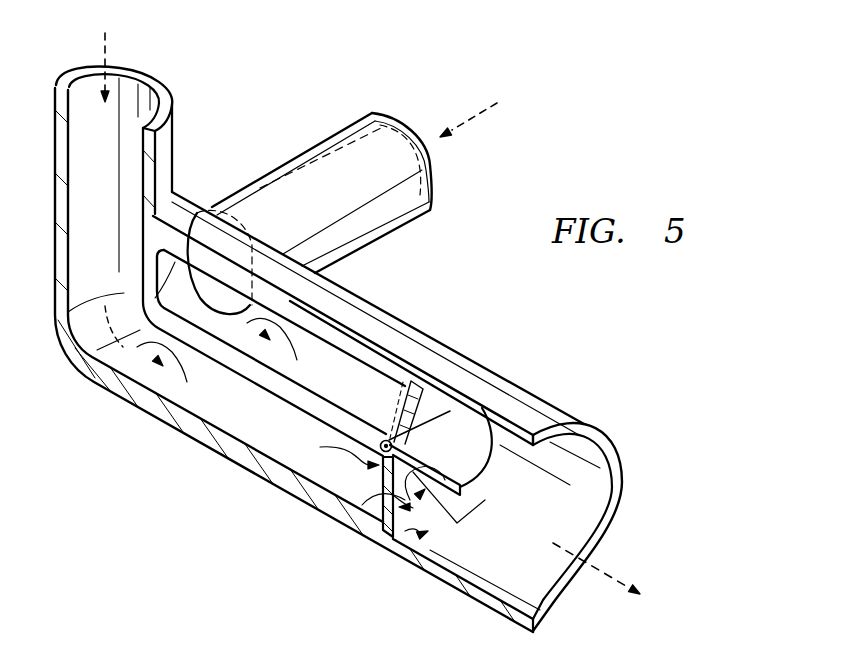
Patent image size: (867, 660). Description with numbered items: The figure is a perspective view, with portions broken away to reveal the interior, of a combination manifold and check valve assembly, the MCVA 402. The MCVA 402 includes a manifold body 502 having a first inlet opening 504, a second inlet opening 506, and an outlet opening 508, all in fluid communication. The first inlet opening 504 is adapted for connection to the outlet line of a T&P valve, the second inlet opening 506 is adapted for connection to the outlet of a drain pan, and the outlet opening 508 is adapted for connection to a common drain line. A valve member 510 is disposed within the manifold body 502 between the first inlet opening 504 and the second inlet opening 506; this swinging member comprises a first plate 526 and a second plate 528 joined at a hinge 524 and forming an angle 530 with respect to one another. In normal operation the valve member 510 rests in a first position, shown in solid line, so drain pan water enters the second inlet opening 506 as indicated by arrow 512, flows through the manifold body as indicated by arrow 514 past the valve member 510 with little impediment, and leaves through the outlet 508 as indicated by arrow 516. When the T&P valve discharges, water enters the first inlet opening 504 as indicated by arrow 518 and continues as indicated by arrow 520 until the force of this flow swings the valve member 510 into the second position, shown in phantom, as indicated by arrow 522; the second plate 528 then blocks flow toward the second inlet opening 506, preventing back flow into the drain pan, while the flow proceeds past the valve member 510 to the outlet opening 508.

The MCVA 402 is at (540, 310).
The manifold body 502 is at (152, 408).
The first inlet opening 504 is at (127, 97).
The second inlet opening 506 is at (407, 120).
The outlet opening 508 is at (620, 487).
The valve member 510 is at (328, 452).
The arrow 512 is at (480, 118).
The arrow 514 is at (271, 342).
The arrow 516 is at (607, 573).
The arrow 518 is at (100, 42).
The arrow 520 is at (186, 373).
The arrow 522 is at (410, 533).
The hinge 524 is at (385, 440).
The first plate 526 is at (381, 512).
The second plate 528 is at (468, 494).
The angle 530 is at (430, 467).